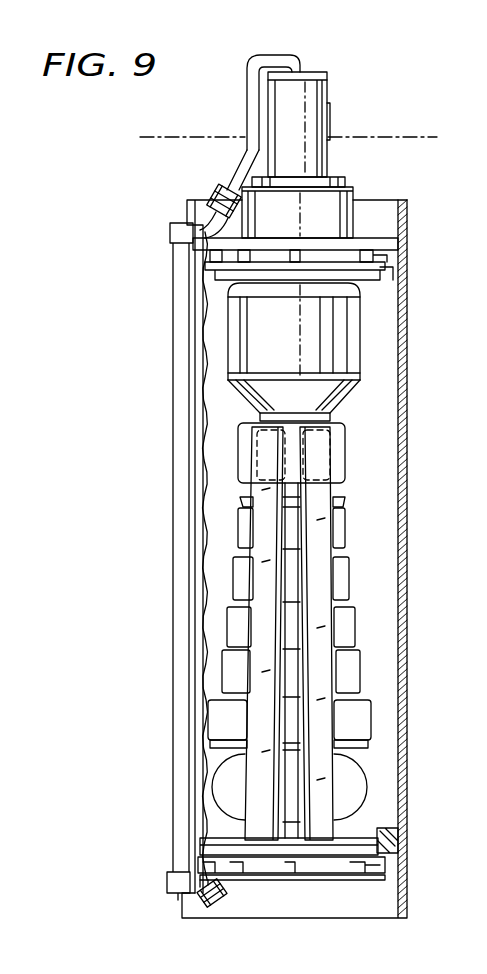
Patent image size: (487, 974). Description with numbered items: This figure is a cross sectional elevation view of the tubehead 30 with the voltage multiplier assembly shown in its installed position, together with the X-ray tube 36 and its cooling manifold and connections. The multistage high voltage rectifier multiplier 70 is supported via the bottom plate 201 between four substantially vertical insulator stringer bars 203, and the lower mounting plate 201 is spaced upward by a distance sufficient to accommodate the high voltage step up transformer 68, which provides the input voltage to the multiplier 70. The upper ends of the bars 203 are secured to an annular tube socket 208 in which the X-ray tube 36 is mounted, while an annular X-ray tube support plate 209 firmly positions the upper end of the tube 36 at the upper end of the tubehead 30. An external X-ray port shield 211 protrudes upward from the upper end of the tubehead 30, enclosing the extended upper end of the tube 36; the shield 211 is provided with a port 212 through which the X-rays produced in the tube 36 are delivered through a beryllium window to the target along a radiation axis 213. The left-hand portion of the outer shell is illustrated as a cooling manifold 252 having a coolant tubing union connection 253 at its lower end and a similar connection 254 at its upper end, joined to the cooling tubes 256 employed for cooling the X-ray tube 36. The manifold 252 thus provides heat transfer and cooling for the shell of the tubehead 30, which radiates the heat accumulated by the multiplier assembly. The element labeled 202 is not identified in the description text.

The tubehead 30 is at (398, 527).
The X-ray tube 36 is at (362, 342).
The high voltage step up transformer 68 is at (222, 788).
The multistage high voltage rectifier multiplier 70 is at (222, 627).
The bottom plate 201 is at (362, 752).
The upper thin bar 202 is at (335, 497).
The insulator stringer bars 203 is at (263, 600).
The annular tube socket 208 is at (238, 460).
The annular X-ray tube support plate 209 is at (228, 282).
The external X-ray port shield 211 is at (327, 112).
The port 212 is at (330, 128).
The radiation axis 213 is at (423, 133).
The cooling manifold 252 is at (180, 735).
The coolant tubing union connection 253 is at (225, 896).
The coolant tubing union connection 254 is at (207, 190).
The cooling tubes 256 is at (300, 61).